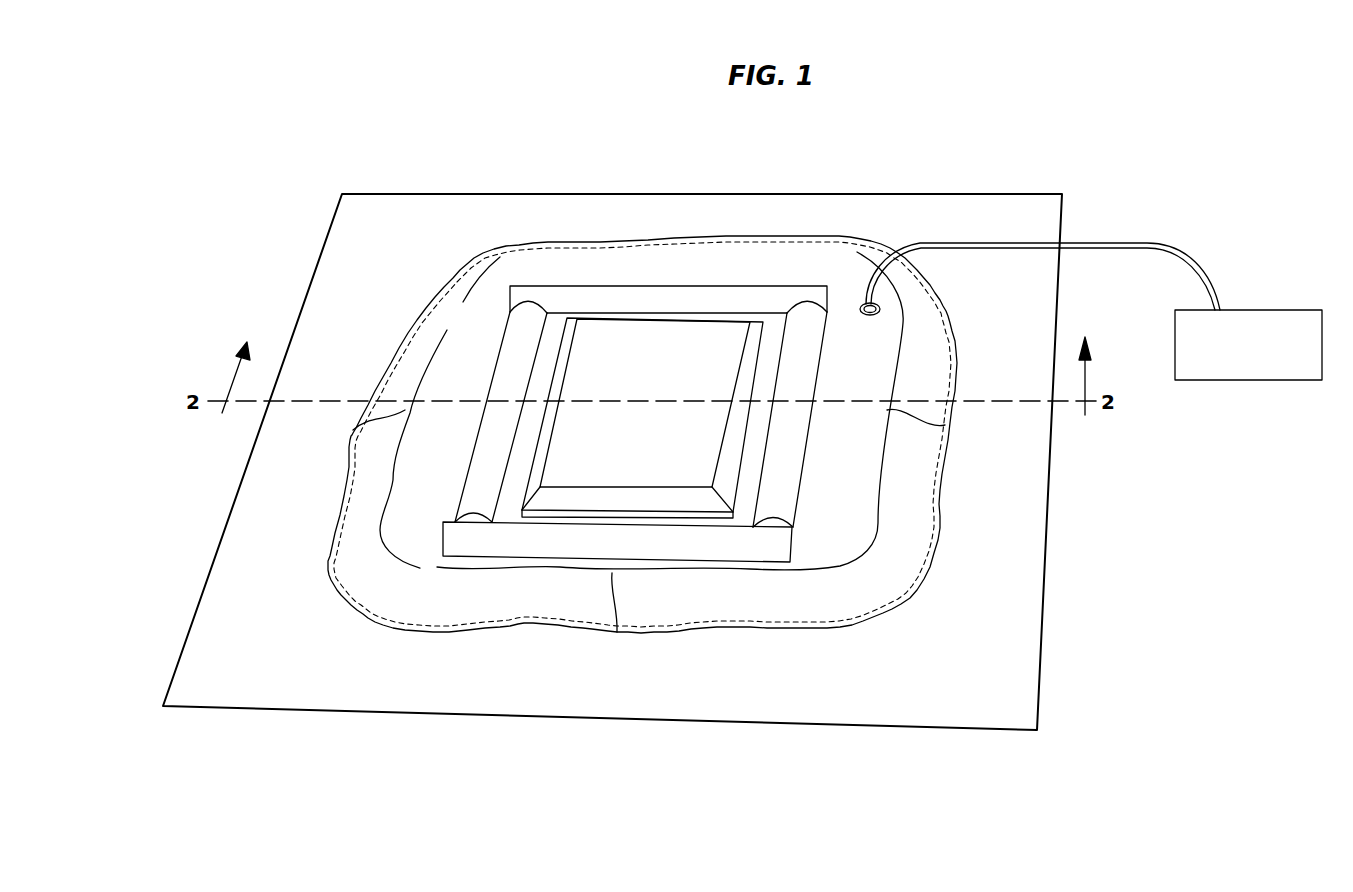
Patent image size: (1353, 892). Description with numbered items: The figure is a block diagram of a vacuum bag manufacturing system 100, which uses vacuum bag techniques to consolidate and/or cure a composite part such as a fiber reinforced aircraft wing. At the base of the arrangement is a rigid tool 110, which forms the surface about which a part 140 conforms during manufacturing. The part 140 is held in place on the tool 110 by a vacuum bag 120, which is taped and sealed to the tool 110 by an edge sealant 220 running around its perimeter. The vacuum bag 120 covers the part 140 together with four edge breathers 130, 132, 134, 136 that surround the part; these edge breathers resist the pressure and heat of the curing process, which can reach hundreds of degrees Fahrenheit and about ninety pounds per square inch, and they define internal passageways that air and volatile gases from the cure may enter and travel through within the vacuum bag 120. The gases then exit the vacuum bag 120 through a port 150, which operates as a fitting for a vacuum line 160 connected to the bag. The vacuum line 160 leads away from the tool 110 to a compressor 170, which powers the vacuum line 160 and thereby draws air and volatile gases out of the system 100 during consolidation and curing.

The vacuum bag manufacturing system 100 is at (1166, 680).
The rigid tool 110 is at (727, 724).
The vacuum bag 120 is at (812, 630).
The edge breather 130 is at (655, 429).
The edge breather 132 is at (792, 420).
The edge breather 134 is at (507, 380).
The edge breather 136 is at (684, 293).
The part 140 is at (643, 370).
The port 150 is at (871, 316).
The vacuum line 160 is at (1147, 243).
The compressor 170 is at (1307, 310).
The edge sealant 220 is at (453, 280).